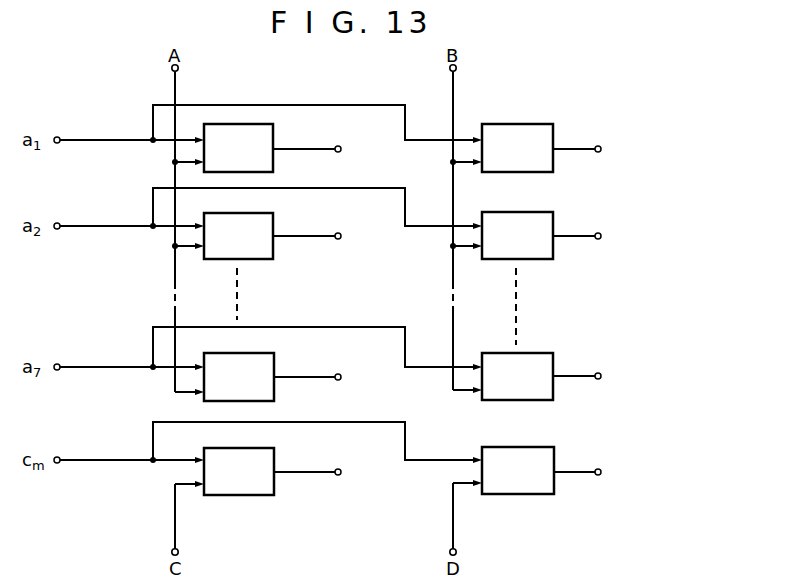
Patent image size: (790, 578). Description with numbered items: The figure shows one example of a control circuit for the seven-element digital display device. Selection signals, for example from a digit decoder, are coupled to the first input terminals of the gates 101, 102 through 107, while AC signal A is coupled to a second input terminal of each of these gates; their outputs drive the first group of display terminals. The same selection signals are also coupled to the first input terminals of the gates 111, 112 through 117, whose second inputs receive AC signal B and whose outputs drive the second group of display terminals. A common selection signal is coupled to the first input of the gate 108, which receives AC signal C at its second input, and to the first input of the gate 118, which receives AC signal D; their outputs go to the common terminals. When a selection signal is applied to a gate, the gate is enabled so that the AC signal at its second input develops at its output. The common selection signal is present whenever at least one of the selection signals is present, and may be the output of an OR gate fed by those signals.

The gate 101 is at (270, 164).
The gate 102 is at (268, 250).
The gate 107 is at (270, 392).
The gate 108 is at (270, 487).
The gate 111 is at (548, 162).
The gate 112 is at (546, 249).
The gate 117 is at (546, 391).
The gate 118 is at (546, 485).